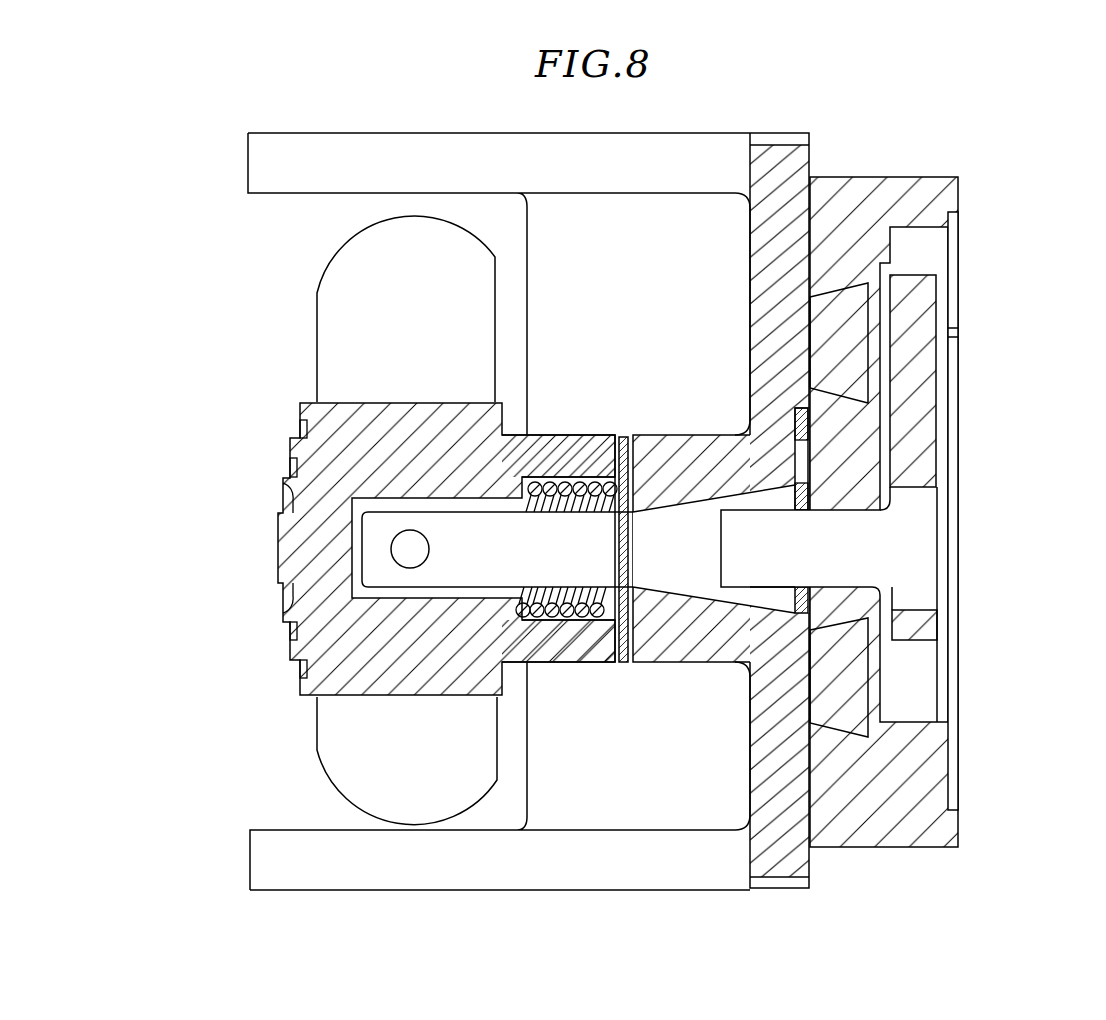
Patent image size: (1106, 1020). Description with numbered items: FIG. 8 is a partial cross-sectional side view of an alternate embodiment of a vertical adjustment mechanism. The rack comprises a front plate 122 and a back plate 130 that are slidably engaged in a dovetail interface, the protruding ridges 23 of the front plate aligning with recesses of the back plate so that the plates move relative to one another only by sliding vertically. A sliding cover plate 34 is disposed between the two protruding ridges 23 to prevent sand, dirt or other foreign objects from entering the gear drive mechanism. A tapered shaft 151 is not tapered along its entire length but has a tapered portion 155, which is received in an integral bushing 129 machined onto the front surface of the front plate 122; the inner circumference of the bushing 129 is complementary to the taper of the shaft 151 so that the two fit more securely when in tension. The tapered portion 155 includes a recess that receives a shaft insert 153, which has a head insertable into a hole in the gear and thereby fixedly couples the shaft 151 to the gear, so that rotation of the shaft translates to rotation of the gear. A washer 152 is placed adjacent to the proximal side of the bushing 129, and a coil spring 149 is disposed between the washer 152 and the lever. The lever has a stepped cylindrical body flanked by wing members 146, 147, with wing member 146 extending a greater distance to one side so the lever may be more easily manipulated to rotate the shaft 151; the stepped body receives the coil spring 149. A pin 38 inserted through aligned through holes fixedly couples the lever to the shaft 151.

The front plate 122 is at (777, 193).
The back plate 130 is at (885, 200).
The sliding cover plate 34 is at (802, 408).
The protruding ridges 23 is at (850, 350).
The wing member 146 is at (353, 300).
The wing member 147 is at (387, 762).
The tapered shaft 151 is at (483, 542).
The pin 38 is at (403, 549).
The washer 152 is at (628, 445).
The tapered portion 155 is at (670, 543).
The integral bushing 129 is at (686, 650).
The coil spring 149 is at (568, 617).
The shaft insert 153 is at (775, 587).